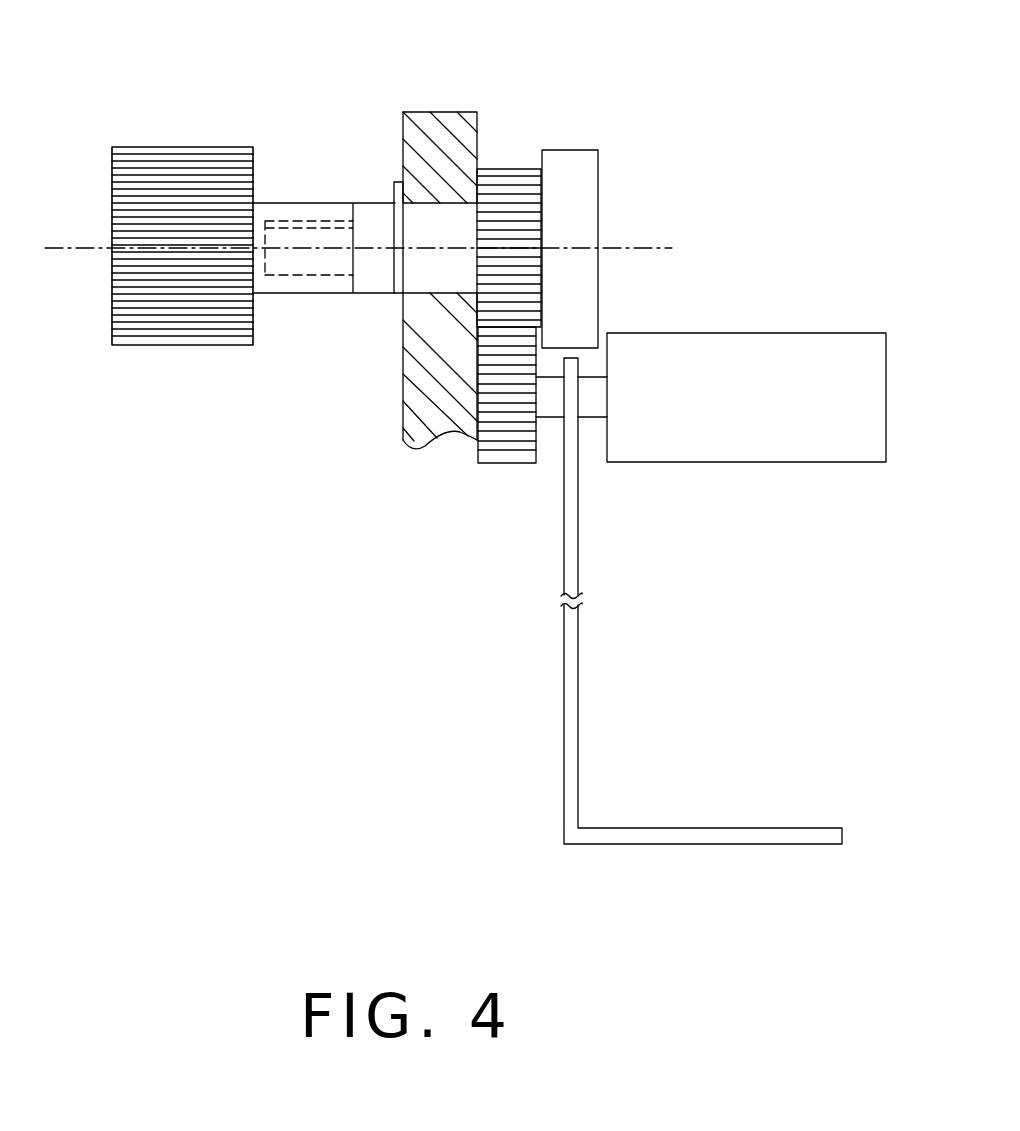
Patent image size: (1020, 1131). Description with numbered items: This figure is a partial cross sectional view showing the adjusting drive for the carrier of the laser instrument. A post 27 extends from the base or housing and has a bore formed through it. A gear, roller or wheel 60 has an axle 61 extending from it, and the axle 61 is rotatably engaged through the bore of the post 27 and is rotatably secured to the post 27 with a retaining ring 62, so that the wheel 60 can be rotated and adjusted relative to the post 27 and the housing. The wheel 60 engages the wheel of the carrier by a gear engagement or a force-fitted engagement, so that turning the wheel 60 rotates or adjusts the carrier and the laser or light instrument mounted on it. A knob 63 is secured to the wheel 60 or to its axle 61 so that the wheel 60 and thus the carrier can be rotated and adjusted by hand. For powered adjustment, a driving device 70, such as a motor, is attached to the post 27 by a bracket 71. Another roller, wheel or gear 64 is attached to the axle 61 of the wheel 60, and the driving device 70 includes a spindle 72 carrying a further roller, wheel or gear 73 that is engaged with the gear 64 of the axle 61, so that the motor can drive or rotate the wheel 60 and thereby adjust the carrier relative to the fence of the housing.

The post 27 is at (452, 125).
The wheel 60 is at (580, 165).
The axle 61 is at (375, 213).
The retaining ring 62 is at (398, 180).
The knob 63 is at (182, 158).
The gear 64 is at (513, 180).
The driving device 70 is at (768, 343).
The bracket 71 is at (567, 695).
The spindle 72 is at (591, 407).
The gear 73 is at (512, 452).